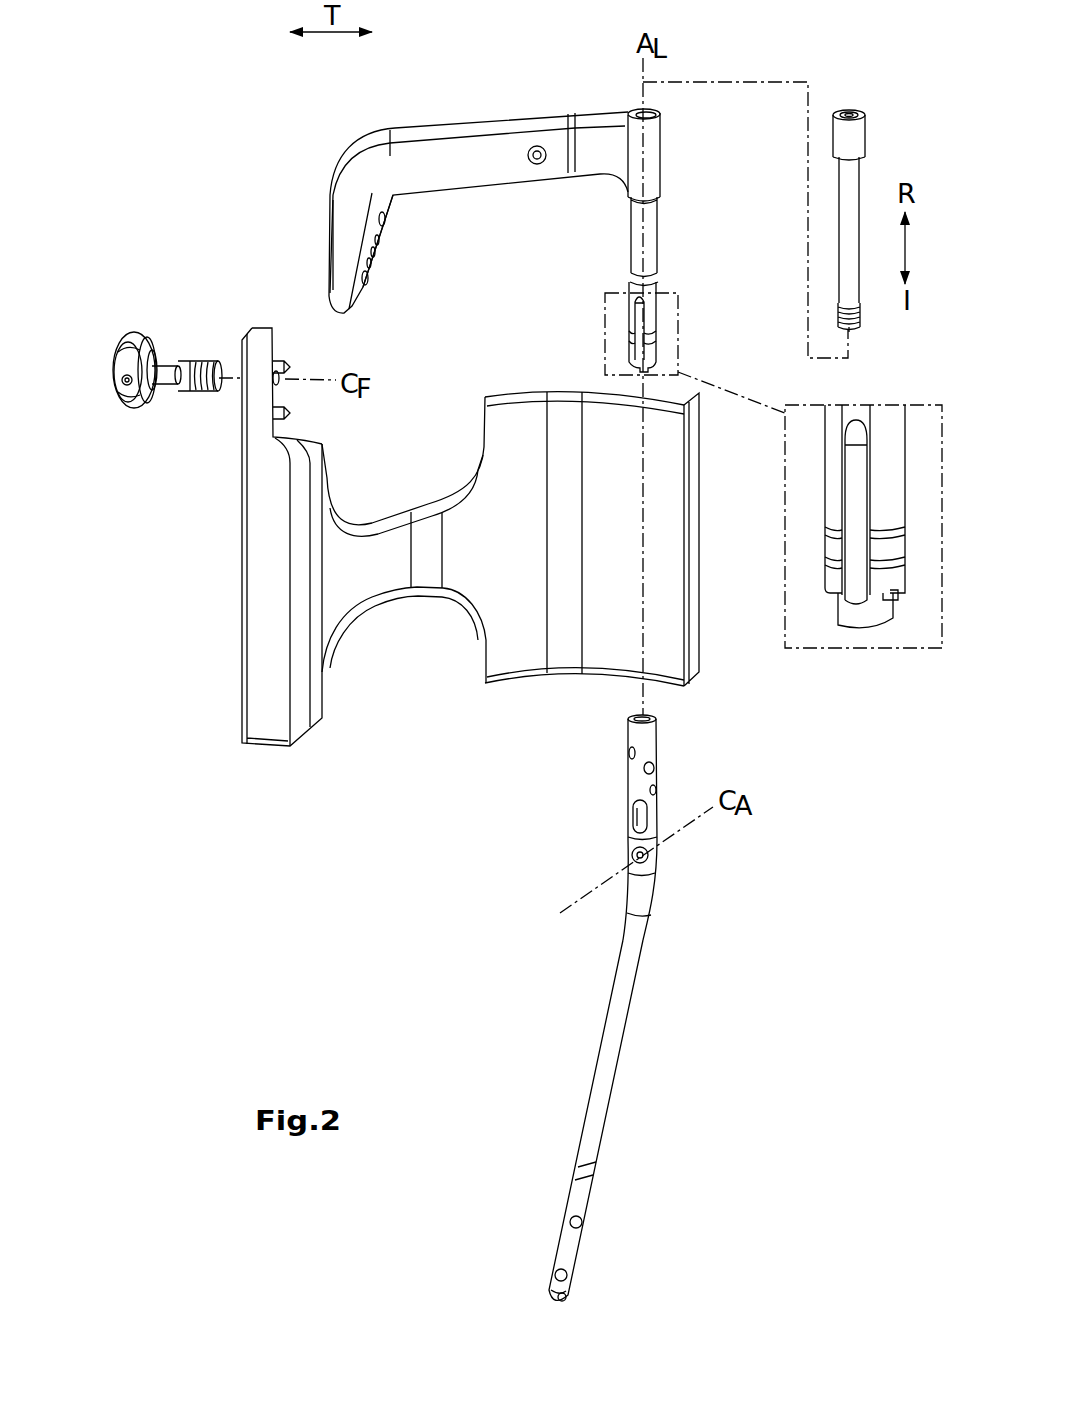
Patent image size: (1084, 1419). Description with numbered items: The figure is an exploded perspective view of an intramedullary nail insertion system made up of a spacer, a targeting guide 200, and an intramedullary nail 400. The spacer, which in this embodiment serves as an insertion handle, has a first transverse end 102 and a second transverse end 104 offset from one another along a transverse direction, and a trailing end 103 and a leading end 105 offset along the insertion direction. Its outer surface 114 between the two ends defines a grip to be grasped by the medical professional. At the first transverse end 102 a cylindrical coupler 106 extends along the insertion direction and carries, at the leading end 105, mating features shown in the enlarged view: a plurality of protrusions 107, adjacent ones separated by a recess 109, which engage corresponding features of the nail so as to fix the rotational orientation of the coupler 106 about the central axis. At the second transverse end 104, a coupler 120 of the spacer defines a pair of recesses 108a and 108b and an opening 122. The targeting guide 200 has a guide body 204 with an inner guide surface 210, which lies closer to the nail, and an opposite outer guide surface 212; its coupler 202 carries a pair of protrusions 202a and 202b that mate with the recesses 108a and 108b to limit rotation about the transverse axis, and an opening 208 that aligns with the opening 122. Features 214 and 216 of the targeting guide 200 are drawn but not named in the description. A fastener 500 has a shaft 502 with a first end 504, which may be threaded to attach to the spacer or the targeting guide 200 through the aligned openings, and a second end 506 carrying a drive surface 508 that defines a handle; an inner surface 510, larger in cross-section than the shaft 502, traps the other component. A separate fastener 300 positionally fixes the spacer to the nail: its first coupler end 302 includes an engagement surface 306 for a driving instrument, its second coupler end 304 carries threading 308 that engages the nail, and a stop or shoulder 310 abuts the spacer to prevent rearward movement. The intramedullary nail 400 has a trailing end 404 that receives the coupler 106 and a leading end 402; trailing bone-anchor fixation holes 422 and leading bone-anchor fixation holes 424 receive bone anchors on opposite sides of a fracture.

The first transverse end 102 is at (606, 379).
The trailing end 103 is at (684, 139).
The second transverse end 104 is at (320, 166).
The leading end 105 is at (676, 356).
The coupler 106 is at (464, 112).
The protrusion 107 is at (852, 602).
The recess 108a is at (383, 219).
The recess 108b is at (367, 285).
The recess 109 is at (887, 606).
The outer surface 114 is at (488, 167).
The coupler 120 is at (342, 237).
The opening 122 is at (378, 252).
The targeting guide 200 is at (409, 694).
The coupler 202 is at (261, 325).
The protrusion 202a is at (295, 350).
The protrusion 202b is at (303, 417).
The guide body 204 is at (672, 663).
The opening 208 is at (281, 393).
The inner guide surface 210 is at (660, 483).
The outer guide surface 212 is at (700, 457).
The plate 214 is at (258, 715).
The saddle web 216 is at (385, 507).
The fastener 300 is at (866, 130).
The first coupler end 302 is at (858, 115).
The second coupler end 304 is at (872, 322).
The engagement surface 306 is at (849, 108).
The threading 308 is at (840, 310).
The stop or shoulder 310 is at (867, 166).
The intramedullary nail 400 is at (575, 1063).
The leading end 402 is at (538, 1240).
The trailing end 404 is at (578, 829).
The trailing bone-anchor fixation holes 422 is at (657, 850).
The leading bone-anchor fixation holes 424 is at (563, 1275).
The fastener 500 is at (108, 354).
The shaft 502 is at (170, 366).
The first end 504 is at (208, 360).
The second end 506 is at (157, 400).
The drive surface 508 is at (118, 385).
The inner surface 510 is at (155, 355).